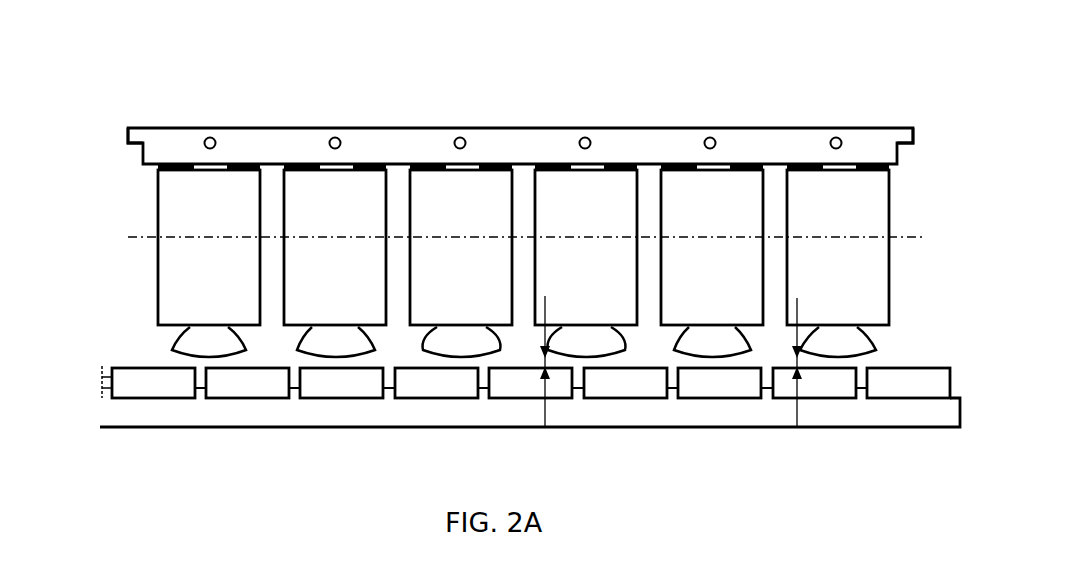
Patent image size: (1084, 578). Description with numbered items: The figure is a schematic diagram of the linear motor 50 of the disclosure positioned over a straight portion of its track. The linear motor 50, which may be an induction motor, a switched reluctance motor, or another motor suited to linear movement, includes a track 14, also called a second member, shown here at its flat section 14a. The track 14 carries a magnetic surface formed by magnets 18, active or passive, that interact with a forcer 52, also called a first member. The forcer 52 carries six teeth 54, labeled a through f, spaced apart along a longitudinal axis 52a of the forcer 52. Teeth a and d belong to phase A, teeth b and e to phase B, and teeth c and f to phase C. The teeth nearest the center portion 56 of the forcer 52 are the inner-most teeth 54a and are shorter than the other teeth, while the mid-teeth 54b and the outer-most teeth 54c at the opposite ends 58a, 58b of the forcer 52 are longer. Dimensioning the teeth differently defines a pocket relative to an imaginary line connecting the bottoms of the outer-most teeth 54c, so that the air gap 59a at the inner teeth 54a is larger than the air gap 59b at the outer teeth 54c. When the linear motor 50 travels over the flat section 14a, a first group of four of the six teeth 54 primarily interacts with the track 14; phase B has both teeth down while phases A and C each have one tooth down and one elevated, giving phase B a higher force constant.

The linear motor 50 is at (362, 80).
The forcer 52 is at (220, 127).
The longitudinal axis 52a is at (137, 237).
The teeth 54 is at (158, 340).
The inner-most teeth 54a is at (524, 343).
The mid-teeth 54b is at (524, 343).
The outer-most teeth 54c is at (524, 343).
The center portion 56 is at (516, 100).
The first end 58a is at (143, 100).
The second end 58b is at (875, 100).
The air gap corresponding to inner teeth 59a is at (545, 352).
The air gap corresponding to outer teeth 59b is at (797, 358).
The magnets 18 is at (102, 368).
The track 14 is at (662, 458).
The flat section 14a is at (115, 408).